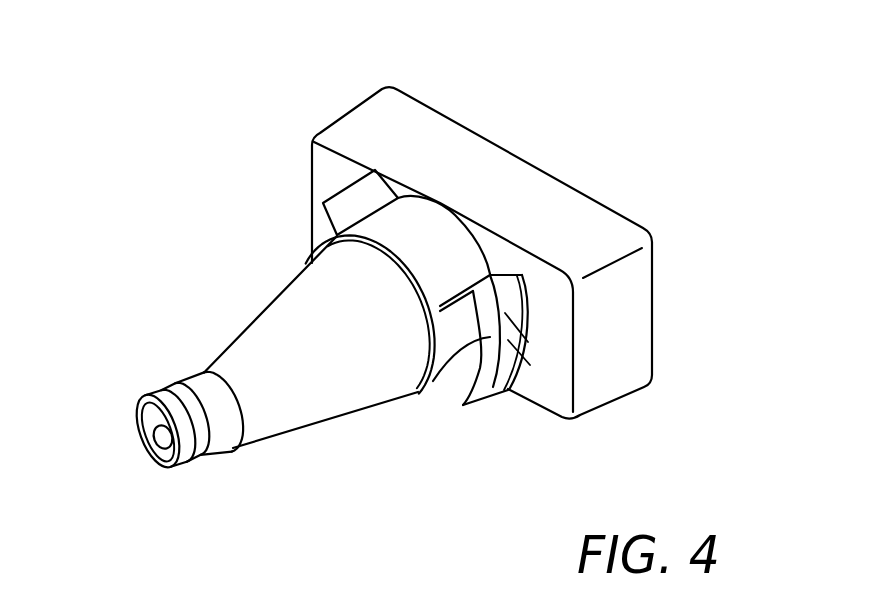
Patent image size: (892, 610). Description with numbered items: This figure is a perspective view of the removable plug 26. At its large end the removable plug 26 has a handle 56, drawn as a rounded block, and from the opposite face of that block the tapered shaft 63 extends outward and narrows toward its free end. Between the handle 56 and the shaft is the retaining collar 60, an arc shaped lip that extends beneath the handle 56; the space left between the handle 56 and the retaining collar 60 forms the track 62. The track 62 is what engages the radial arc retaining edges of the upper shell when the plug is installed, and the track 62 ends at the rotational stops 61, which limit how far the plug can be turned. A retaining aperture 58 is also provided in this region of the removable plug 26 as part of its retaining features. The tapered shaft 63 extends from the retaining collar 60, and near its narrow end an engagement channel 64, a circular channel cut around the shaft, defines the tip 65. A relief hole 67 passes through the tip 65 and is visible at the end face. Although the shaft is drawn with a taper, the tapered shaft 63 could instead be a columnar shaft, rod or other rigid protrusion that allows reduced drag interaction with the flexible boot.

The removable plug 26 is at (663, 107).
The handle 56 is at (610, 227).
The retaining aperture 58 is at (520, 300).
The retaining collar 60 is at (427, 395).
The rotational stops 61 is at (363, 197).
The track 62 is at (521, 302).
The tapered shaft 63 is at (283, 323).
The engagement channel 64 is at (245, 441).
The tip 65 is at (176, 458).
The relief hole 67 is at (157, 432).